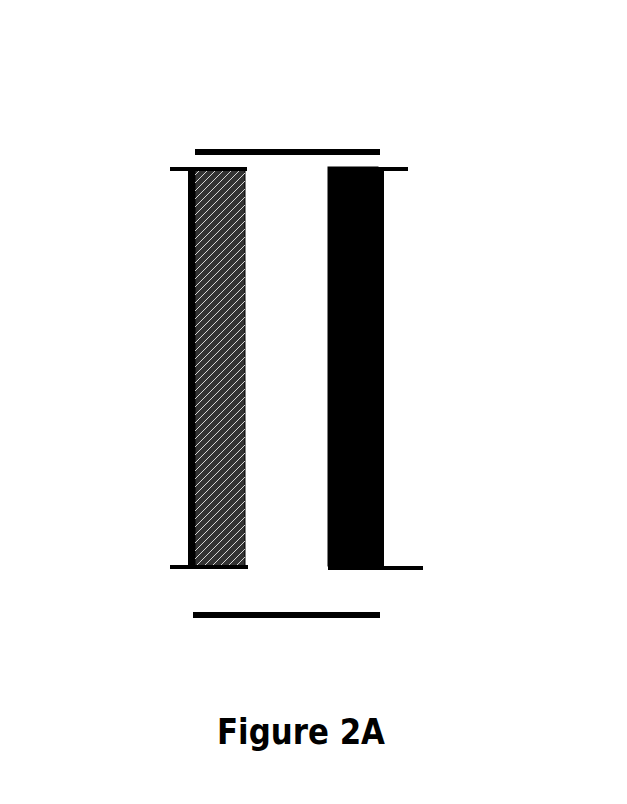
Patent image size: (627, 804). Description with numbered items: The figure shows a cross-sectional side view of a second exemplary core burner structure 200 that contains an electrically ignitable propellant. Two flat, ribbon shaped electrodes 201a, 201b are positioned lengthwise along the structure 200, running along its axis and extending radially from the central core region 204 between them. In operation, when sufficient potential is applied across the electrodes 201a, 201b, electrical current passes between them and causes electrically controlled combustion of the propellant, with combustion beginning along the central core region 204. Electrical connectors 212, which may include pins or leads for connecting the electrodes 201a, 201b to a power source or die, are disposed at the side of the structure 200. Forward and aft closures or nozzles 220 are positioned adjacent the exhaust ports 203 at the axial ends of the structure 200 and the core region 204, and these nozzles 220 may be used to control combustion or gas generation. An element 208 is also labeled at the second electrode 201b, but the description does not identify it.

The core burner structure 200 is at (147, 114).
The electrode 201a is at (222, 332).
The electrode 201b is at (362, 333).
The exhaust port 203 is at (272, 166).
The central core region 204 is at (305, 471).
The current collector 208 is at (383, 193).
The electrical connector 212 is at (170, 568).
The closure or nozzle 220 is at (346, 390).